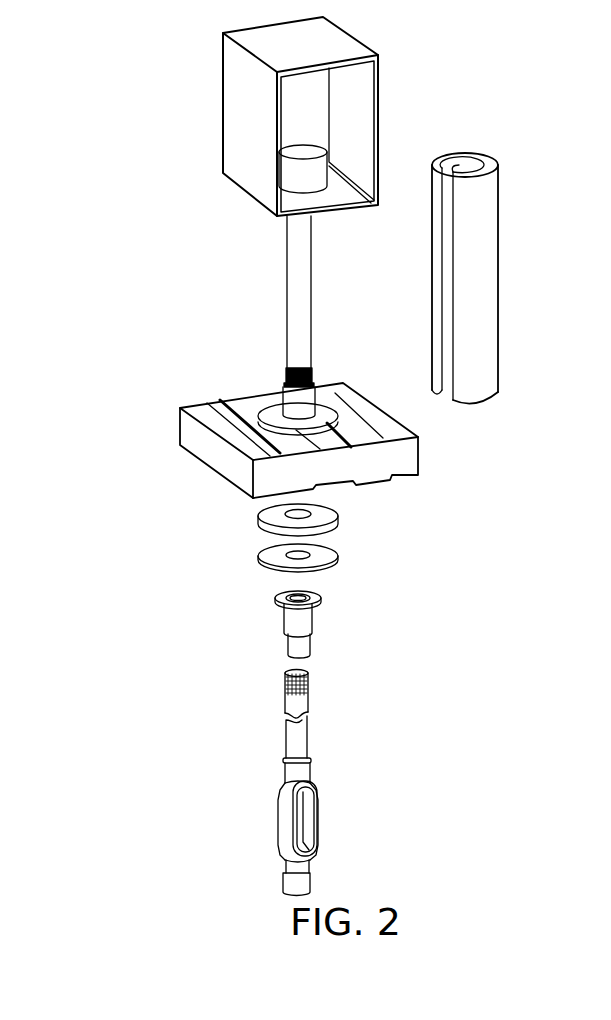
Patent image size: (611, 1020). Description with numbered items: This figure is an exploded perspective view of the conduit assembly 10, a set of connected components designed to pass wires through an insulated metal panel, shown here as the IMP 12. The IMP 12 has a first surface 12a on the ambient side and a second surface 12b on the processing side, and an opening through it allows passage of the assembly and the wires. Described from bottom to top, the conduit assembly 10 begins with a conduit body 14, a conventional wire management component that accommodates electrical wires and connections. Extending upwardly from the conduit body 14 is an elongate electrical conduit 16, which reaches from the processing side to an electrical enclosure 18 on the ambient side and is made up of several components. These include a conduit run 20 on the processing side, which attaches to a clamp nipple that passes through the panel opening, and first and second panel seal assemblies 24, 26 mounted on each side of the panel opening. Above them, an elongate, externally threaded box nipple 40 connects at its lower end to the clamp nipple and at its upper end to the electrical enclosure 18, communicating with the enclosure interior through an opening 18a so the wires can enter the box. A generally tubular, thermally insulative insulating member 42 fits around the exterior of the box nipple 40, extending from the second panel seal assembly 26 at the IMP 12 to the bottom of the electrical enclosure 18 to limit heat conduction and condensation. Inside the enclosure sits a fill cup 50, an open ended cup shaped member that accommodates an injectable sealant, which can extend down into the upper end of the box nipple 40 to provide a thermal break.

The conduit assembly 10 is at (128, 289).
The IMP 12 is at (410, 449).
The first surface 12a is at (207, 410).
The second surface 12b is at (208, 463).
The conduit body 14 is at (319, 815).
The electrical conduit 16 is at (540, 345).
The electrical enclosure 18 is at (367, 86).
The opening 18a is at (293, 87).
The conduit run 20 is at (305, 728).
The first panel seal assembly 24 is at (358, 502).
The second panel seal assembly 26 is at (304, 400).
The box nipple 40 is at (297, 272).
The insulating member 42 is at (488, 235).
The fill cup 50 is at (291, 176).